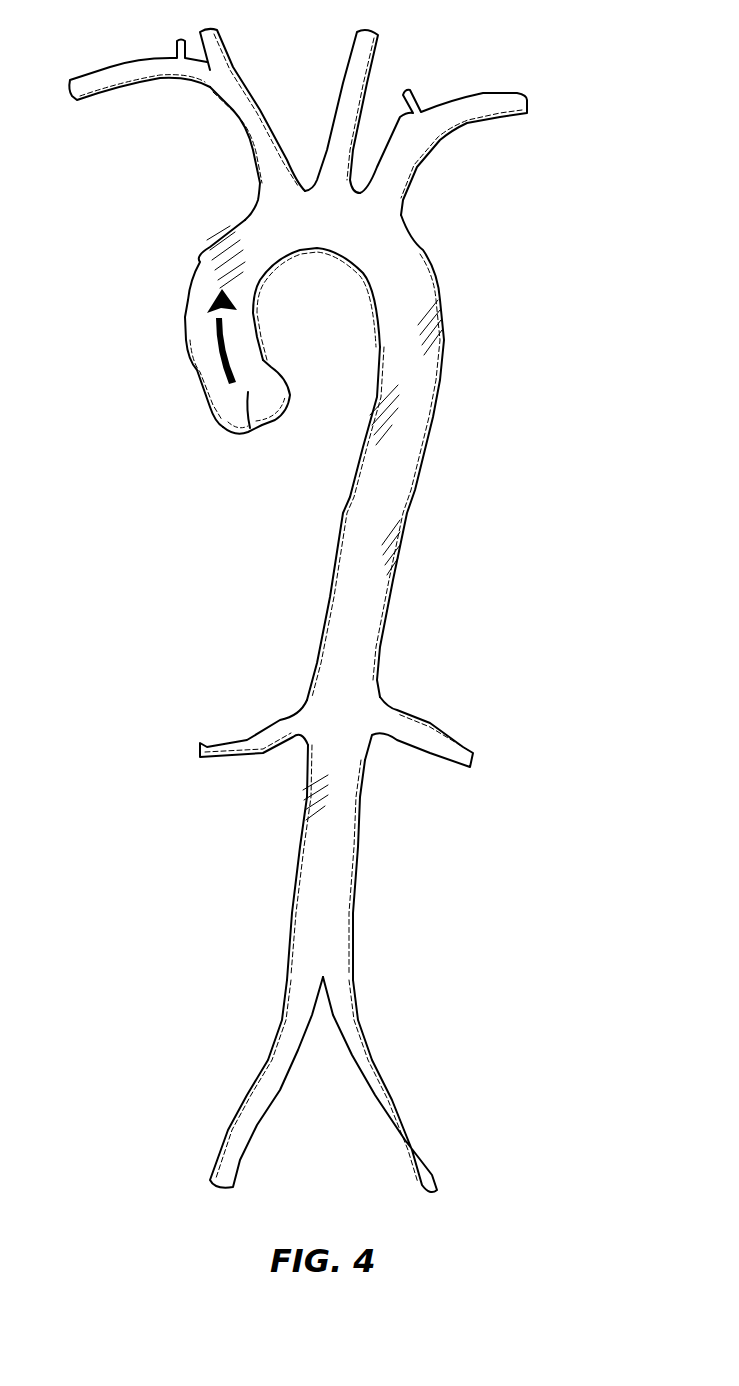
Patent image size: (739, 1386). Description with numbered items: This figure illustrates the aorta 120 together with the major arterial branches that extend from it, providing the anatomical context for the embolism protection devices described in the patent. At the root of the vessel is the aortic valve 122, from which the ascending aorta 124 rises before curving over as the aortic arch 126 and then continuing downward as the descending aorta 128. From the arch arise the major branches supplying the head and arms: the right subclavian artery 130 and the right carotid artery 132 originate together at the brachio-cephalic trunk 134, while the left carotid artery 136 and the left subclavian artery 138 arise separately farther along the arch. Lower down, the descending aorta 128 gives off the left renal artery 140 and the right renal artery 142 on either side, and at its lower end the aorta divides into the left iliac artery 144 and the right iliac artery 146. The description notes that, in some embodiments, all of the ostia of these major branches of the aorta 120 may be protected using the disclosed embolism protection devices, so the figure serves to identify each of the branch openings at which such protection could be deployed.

The aorta 120 is at (529, 231).
The aortic valve 122 is at (240, 430).
The ascending aorta 124 is at (185, 311).
The aortic arch 126 is at (315, 257).
The descending aorta 128 is at (433, 417).
The right subclavian artery 130 is at (143, 83).
The right carotid artery 132 is at (220, 42).
The brachio-cephalic trunk 134 is at (235, 117).
The left carotid artery 136 is at (373, 62).
The left subclavian artery 138 is at (490, 93).
The left renal artery 140 is at (240, 757).
The right renal artery 142 is at (437, 757).
The left iliac artery 144 is at (212, 1148).
The right iliac artery 146 is at (433, 1168).